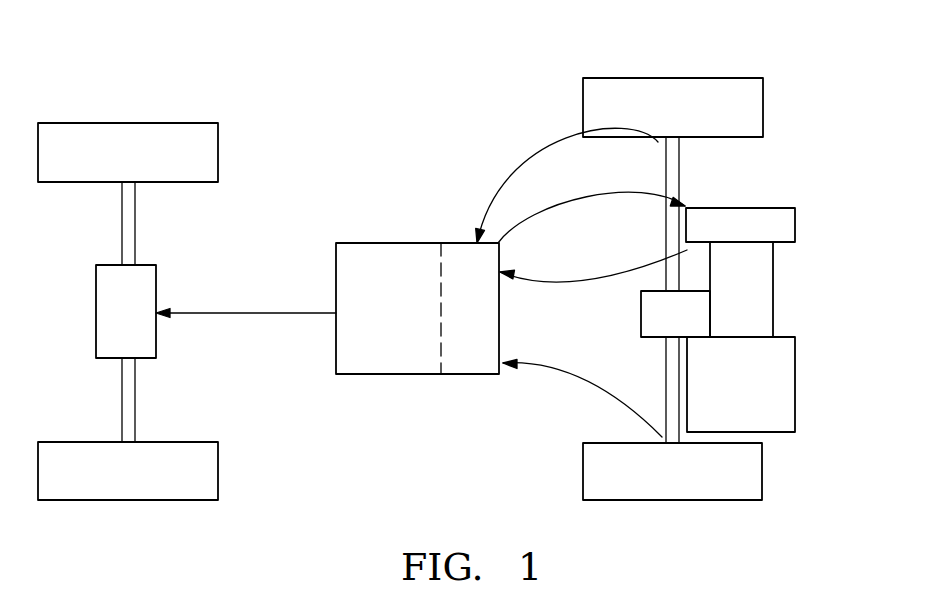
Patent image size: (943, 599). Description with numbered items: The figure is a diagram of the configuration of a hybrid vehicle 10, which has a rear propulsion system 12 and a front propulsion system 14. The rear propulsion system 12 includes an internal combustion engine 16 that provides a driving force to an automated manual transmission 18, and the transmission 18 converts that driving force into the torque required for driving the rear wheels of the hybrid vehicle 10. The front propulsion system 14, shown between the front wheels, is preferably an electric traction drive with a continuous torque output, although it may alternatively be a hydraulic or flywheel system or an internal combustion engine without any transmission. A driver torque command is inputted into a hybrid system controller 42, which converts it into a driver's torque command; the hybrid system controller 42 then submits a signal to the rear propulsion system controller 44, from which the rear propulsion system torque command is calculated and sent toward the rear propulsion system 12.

The hybrid vehicle 10 is at (458, 256).
The rear propulsion system 12 is at (760, 350).
The front propulsion system 14 is at (147, 282).
The internal combustion engine 16 is at (757, 418).
The automated manual transmission 18 is at (762, 281).
The hybrid system controller 42 is at (401, 386).
The rear propulsion system (RPS) controller 44 is at (470, 364).